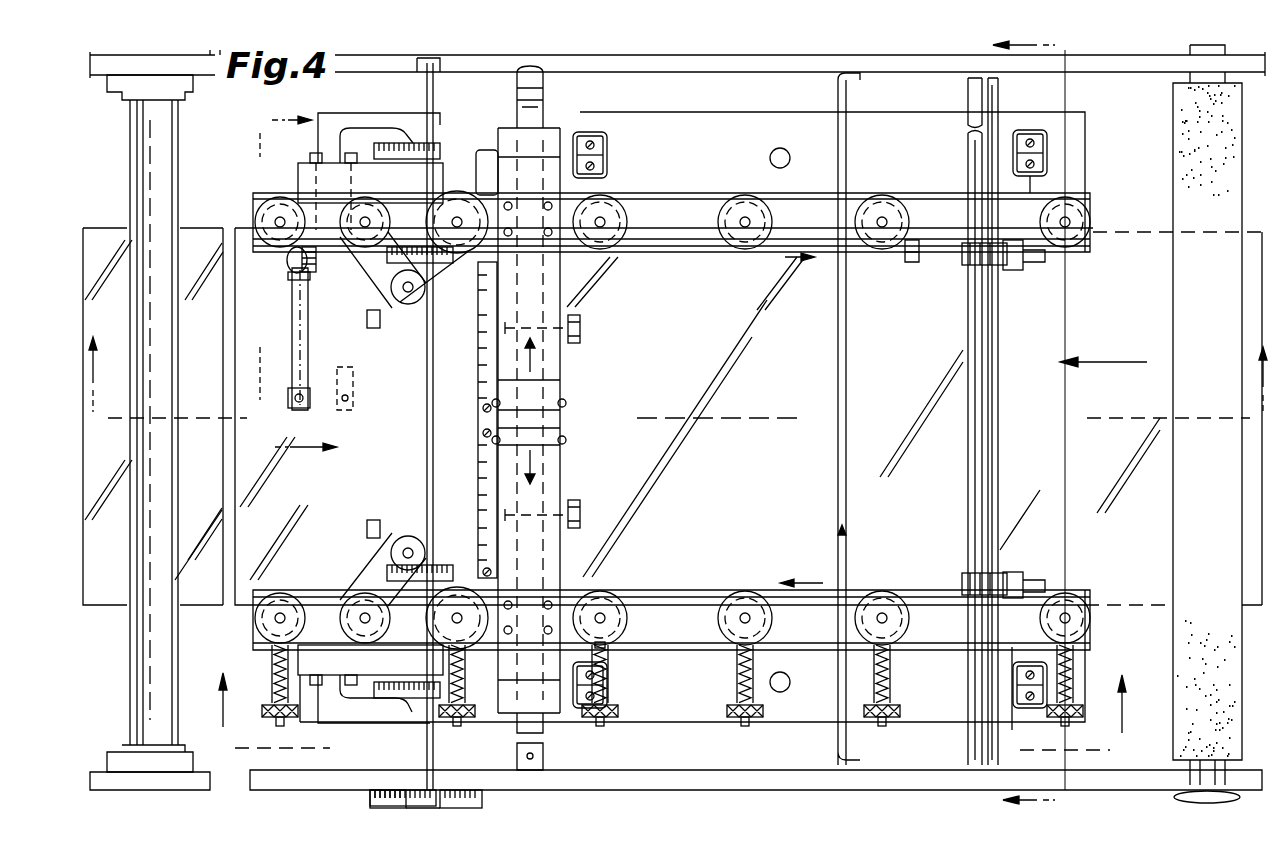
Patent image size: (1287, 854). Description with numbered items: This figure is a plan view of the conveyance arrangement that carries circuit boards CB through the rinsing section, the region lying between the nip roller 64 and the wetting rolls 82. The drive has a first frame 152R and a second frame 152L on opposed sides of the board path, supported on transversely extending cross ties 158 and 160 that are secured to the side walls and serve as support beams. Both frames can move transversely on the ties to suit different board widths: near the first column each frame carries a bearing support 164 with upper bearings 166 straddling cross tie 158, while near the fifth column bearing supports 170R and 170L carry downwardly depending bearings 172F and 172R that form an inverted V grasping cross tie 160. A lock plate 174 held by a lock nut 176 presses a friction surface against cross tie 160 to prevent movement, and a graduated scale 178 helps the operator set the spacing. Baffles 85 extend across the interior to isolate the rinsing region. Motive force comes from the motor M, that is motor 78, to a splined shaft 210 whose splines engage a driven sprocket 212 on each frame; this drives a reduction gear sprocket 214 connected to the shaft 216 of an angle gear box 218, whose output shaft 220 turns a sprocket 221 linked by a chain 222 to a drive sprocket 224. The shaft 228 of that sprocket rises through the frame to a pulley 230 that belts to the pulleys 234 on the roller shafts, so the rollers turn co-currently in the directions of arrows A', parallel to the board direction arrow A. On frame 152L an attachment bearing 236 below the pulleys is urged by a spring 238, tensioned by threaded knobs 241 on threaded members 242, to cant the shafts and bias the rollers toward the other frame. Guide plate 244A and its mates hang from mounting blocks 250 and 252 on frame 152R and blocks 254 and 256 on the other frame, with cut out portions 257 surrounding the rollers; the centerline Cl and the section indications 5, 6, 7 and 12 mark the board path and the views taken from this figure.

The first frame 152R is at (797, 65).
The second frame 152L is at (763, 757).
The wetting rolls 82 is at (143, 668).
The nip roller 64 is at (1187, 187).
The circuit boards CB is at (1143, 257).
The plate 244A is at (690, 217).
The pulleys 234 is at (471, 199).
The attachment bearing 236 is at (710, 632).
The spring 238 is at (610, 675).
The threaded members 242 is at (610, 697).
The threaded knobs 241 is at (623, 717).
The mounting block 252 is at (607, 158).
The mounting block 250 is at (1043, 162).
The mounting block 256 is at (577, 707).
The mounting block 254 is at (1027, 675).
The cross tie 160 is at (565, 417).
The bearing support 170R is at (550, 268).
The bearing support 170L is at (580, 567).
The lock plate 174 is at (552, 362).
The lock nut 176 is at (582, 328).
The front bearing 172F is at (560, 140).
The rear bearing 172R is at (470, 410).
The graduated scale 178 is at (476, 355).
The shaft 228 is at (370, 191).
The driven sprocket 212 is at (378, 145).
The reduction gear sprocket 214 is at (397, 130).
The shaft 216 is at (413, 143).
The splined shaft 210 is at (437, 748).
The pulley 230 is at (498, 166).
The drive sprocket 224 is at (290, 257).
The chain 222 is at (385, 260).
The sprocket 221 is at (404, 287).
The output shaft 220 is at (372, 320).
The angle gear box 218 is at (368, 343).
The baffles 85 is at (833, 437).
The cross tie 158 is at (982, 497).
The upper bearings 166 is at (983, 263).
The bearing support 164 is at (1023, 253).
The cut out portions 257 is at (913, 252).
The motor 78 is at (488, 797).
The motor M is at (423, 798).
The center line Cl is at (745, 418).
The arrow A is at (1104, 342).
The arrows A' is at (796, 420).
The section line 5- 5 is at (674, 385).
The section line 6- 6 is at (670, 719).
The section line 7- 7 is at (1033, 423).
The section line 12 is at (290, 285).